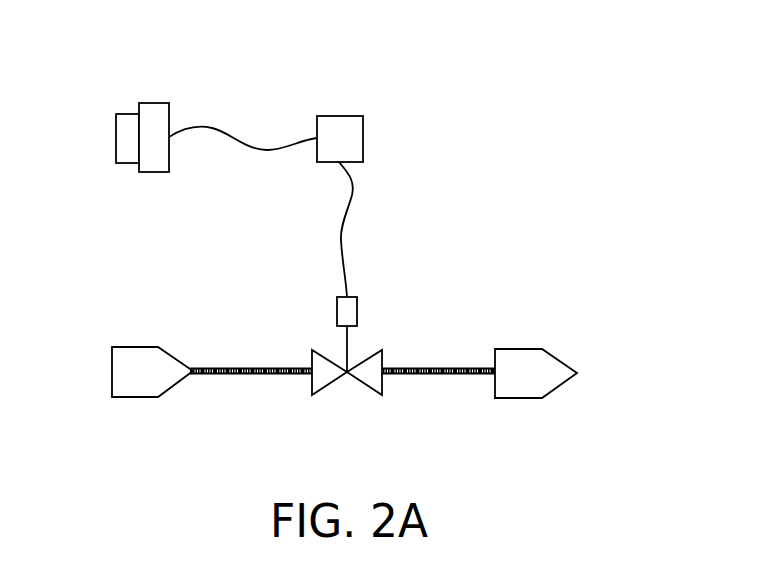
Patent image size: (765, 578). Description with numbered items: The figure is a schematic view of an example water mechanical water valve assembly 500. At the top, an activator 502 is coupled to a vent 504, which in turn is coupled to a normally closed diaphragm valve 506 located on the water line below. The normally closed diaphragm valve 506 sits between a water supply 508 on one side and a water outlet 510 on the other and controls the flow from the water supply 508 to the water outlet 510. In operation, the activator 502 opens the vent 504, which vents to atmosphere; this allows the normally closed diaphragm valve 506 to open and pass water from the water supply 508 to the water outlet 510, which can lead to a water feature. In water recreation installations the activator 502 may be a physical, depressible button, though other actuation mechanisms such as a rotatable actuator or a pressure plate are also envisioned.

The mechanical water valve assembly 500 is at (649, 144).
The activator 502 is at (158, 116).
The vent 504 is at (339, 123).
The normally closed diaphragm valve 506 is at (385, 360).
The water supply 508 is at (155, 358).
The water outlet 510 is at (514, 362).